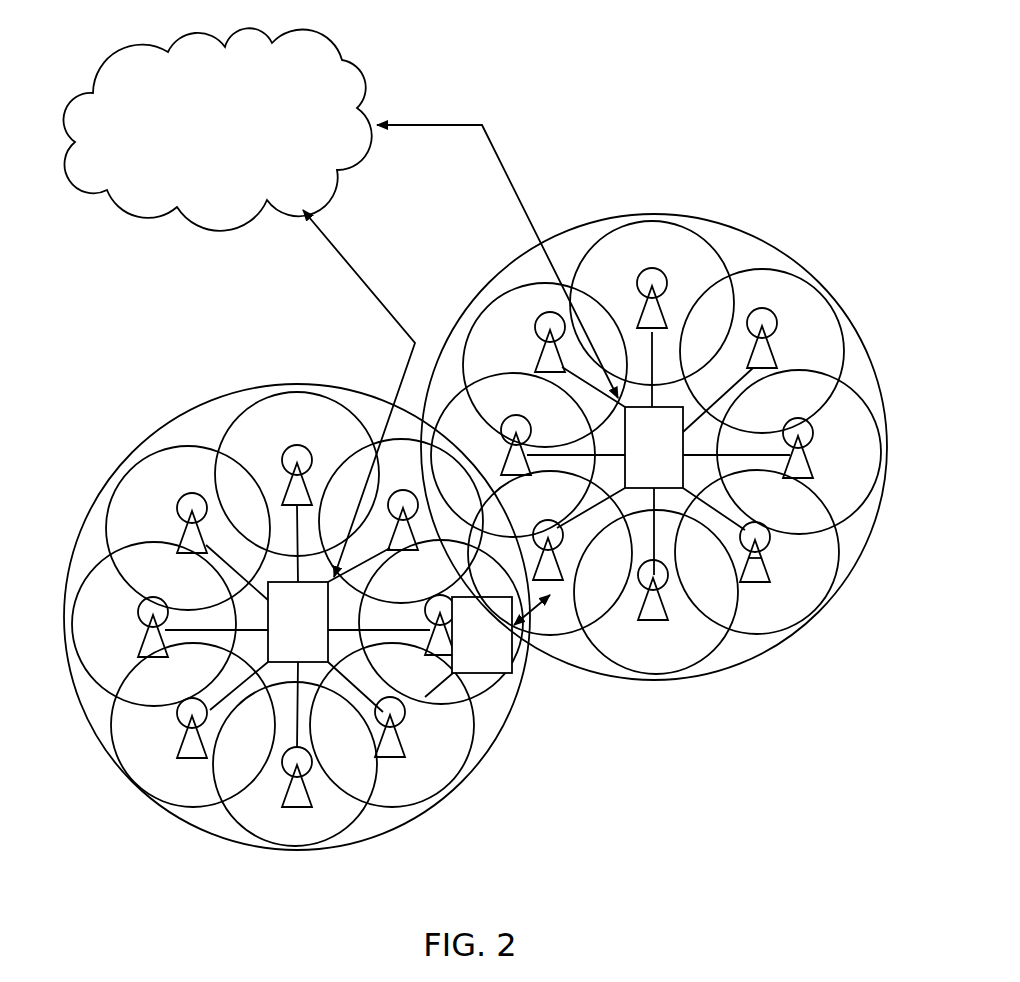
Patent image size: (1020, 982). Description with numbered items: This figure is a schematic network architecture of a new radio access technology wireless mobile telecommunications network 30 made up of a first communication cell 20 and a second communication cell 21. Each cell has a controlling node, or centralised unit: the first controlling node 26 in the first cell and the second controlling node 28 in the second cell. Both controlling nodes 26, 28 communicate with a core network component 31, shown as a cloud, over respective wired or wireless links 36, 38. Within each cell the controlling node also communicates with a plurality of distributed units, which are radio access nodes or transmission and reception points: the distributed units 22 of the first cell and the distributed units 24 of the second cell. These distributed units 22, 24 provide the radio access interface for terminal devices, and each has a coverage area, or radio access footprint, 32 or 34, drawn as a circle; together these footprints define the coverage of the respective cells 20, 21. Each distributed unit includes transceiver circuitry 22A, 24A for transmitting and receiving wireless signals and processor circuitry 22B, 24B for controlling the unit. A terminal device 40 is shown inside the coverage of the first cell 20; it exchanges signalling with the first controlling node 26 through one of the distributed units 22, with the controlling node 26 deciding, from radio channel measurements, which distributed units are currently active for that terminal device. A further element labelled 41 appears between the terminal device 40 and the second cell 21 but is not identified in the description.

The first communication cell 20 is at (200, 405).
The second communication cell 21 is at (662, 213).
The distributed units 22 is at (292, 660).
The transceiver circuitry 22A is at (405, 725).
The processor circuitry 22B is at (383, 745).
The distributed units 24 is at (715, 476).
The transceiver circuitry 24A is at (765, 547).
The processor circuitry 24B is at (757, 568).
The controlling node 26 is at (298, 622).
The controlling node 28 is at (654, 447).
The new RAT wireless mobile telecommunications network/system 30 is at (650, 96).
The core network component 31 is at (217, 129).
The coverage area 32 is at (95, 562).
The coverage area 34 is at (763, 268).
The wired or wireless link 36 is at (352, 269).
The wired or wireless link 38 is at (440, 124).
The terminal device 40 is at (477, 677).
The communication link between UAVs 41 is at (553, 607).